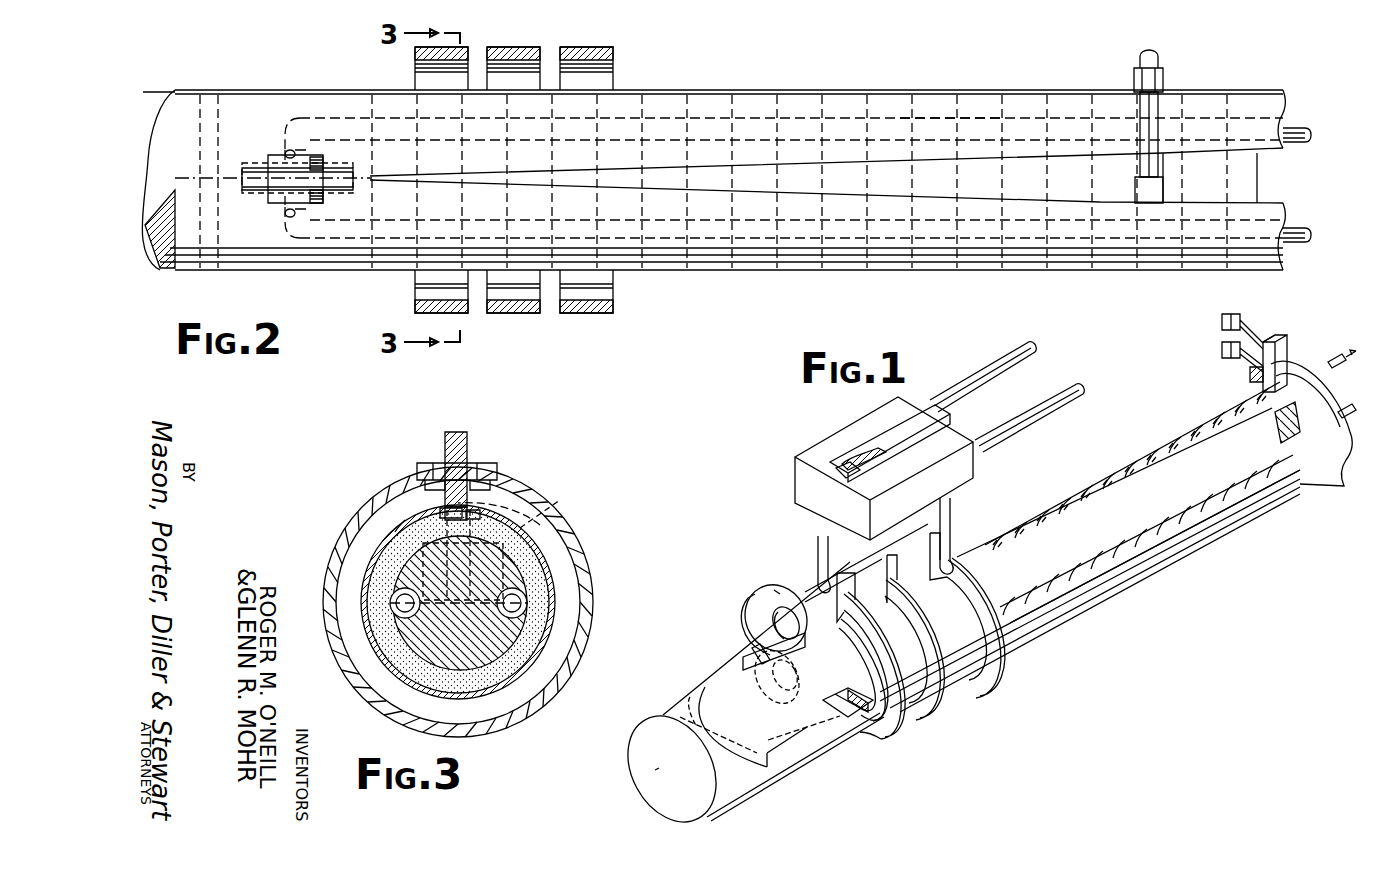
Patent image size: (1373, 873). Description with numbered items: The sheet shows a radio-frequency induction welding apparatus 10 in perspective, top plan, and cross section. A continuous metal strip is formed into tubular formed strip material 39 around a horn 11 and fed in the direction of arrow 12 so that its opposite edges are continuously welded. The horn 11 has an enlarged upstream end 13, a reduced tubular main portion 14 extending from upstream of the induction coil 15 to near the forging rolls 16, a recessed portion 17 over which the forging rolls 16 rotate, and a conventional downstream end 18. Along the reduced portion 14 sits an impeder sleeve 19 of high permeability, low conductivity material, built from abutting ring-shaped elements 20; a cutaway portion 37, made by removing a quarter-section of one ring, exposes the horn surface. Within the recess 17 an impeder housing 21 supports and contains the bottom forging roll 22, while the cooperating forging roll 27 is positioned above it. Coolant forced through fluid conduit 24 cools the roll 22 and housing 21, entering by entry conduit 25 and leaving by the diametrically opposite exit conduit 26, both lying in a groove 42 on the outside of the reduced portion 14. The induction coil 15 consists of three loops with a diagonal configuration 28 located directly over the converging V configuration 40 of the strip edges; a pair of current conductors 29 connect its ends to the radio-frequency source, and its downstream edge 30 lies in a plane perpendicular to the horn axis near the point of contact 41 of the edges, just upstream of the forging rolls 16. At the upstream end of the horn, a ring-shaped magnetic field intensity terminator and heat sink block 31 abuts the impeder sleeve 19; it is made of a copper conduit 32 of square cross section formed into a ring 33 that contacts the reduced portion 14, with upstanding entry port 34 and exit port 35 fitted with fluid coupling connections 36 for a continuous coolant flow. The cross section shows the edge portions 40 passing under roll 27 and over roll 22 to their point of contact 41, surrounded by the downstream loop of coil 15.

In FIG. 2, the radio-frequency welding apparatus 10 is at (837, 172).
In FIG. 1, the radio-frequency welding apparatus 10 is at (1054, 658).
In FIG. 2, the horn 11 is at (1278, 195).
In FIG. 3, the horn 11 is at (494, 664).
In FIG. 1, the horn 11 is at (674, 702).
In FIG. 1, the arrow 12 is at (1161, 484).
In FIG. 1, the enlarged upstream end 13 is at (1338, 466).
In FIG. 3, the reduced tubular main portion 14 is at (430, 644).
In FIG. 1, the reduced tubular main portion 14 is at (1282, 466).
In FIG. 2, the induction coil 15 is at (586, 313).
In FIG. 3, the induction coil 15 is at (330, 574).
In FIG. 1, the induction coil 15 is at (976, 676).
In FIG. 2, the forging rolls 16 is at (266, 149).
In FIG. 3, the forging rolls 16 is at (484, 444).
In FIG. 1, the forging rolls 16 is at (776, 576).
In FIG. 2, the recessed portion 17 is at (213, 100).
In FIG. 3, the recessed portion 17 is at (526, 614).
In FIG. 1, the recessed portion 17 is at (760, 768).
In FIG. 1, the downstream end 18 is at (662, 778).
In FIG. 2, the impeder sleeve 19 is at (980, 170).
In FIG. 3, the impeder sleeve 19 is at (540, 560).
In FIG. 1, the impeder sleeve 19 is at (1108, 448).
In FIG. 1, the ring-shaped elements 20 is at (1056, 488).
In FIG. 2, the impeder housing 21 is at (243, 100).
In FIG. 1, the impeder housing 21 is at (696, 684).
In FIG. 3, the bottom forging roll 22 is at (558, 502).
In FIG. 1, the bottom forging roll 22 is at (754, 664).
In FIG. 2, the fluid conduit 24 is at (312, 238).
In FIG. 3, the fluid conduit 24 is at (404, 520).
In FIG. 1, the fluid conduit 24 is at (831, 722).
In FIG. 2, the entry conduit 25 is at (1294, 242).
In FIG. 3, the entry conduit 25 is at (396, 612).
In FIG. 1, the entry conduit 25 is at (1148, 526).
In FIG. 2, the exit conduit 26 is at (1298, 128).
In FIG. 3, the exit conduit 26 is at (516, 604).
In FIG. 1, the exit conduit 26 is at (1326, 360).
In FIG. 3, the cooperating forging roll 27 is at (456, 428).
In FIG. 1, the cooperating forging roll 27 is at (770, 600).
In FIG. 2, the diagonal configuration 28 is at (295, 183).
In FIG. 3, the diagonal configuration 28 is at (480, 470).
In FIG. 1, the diagonal configuration 28 is at (826, 586).
In FIG. 1, the current conductors 29 is at (933, 393).
In FIG. 1, the downstream edge 30 is at (878, 744).
In FIG. 2, the magnetic field intensity terminator and heat sink block 31 is at (1129, 166).
In FIG. 1, the magnetic field intensity terminator and heat sink block 31 is at (1286, 327).
In FIG. 1, the conduit 32 is at (1248, 380).
In FIG. 1, the ring 33 is at (1300, 486).
In FIG. 2, the entry port 34 is at (1140, 192).
In FIG. 1, the entry port 34 is at (1268, 340).
In FIG. 2, the exit port 35 is at (1164, 172).
In FIG. 1, the exit port 35 is at (1226, 332).
In FIG. 2, the fluid coupling connections 36 is at (1161, 74).
In FIG. 1, the fluid coupling connections 36 is at (1222, 322).
In FIG. 1, the cutaway portion 37 is at (846, 660).
In FIG. 2, the tubular formed strip material 39 is at (1266, 90).
In FIG. 3, the tubular formed strip material 39 is at (540, 526).
In FIG. 2, the converging V configuration 40 is at (906, 202).
In FIG. 3, the converging V configuration 40 is at (436, 512).
In FIG. 2, the point of contact 41 is at (374, 176).
In FIG. 3, the point of contact 41 is at (450, 508).
In FIG. 3, the groove 42 is at (392, 554).